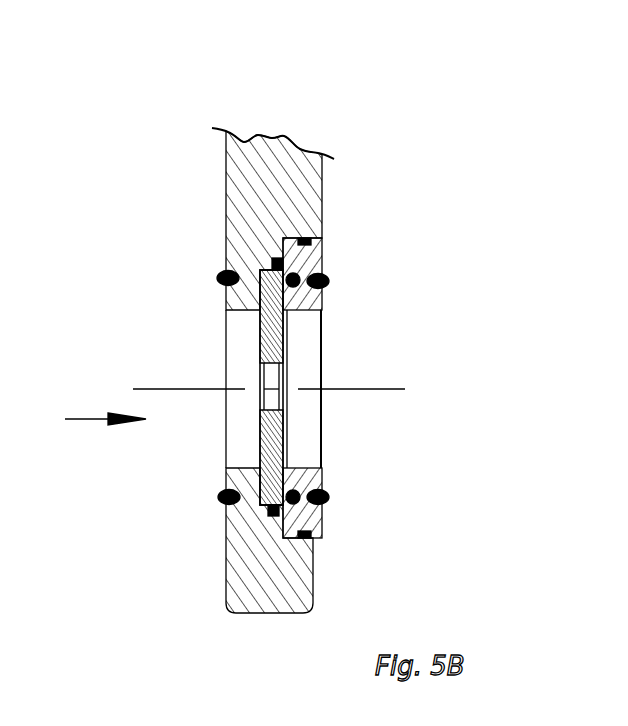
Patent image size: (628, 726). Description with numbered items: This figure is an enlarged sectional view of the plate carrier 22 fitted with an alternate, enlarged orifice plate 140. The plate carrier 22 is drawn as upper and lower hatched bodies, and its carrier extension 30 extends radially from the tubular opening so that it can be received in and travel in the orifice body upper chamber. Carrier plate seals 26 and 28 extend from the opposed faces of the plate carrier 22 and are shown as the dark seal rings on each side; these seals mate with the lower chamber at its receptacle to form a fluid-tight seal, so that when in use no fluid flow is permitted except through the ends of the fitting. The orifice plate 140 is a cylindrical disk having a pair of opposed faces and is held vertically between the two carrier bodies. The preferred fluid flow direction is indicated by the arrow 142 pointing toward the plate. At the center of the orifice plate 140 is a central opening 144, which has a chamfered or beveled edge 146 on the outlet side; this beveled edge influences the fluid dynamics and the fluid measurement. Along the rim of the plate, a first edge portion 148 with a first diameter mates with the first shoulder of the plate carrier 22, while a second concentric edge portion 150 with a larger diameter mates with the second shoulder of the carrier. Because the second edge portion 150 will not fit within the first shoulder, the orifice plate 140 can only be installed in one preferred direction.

The plate carrier 22 is at (248, 613).
The carrier plate seal 26 is at (325, 283).
The carrier plate seal 28 is at (222, 270).
The carrier extension 30 is at (278, 137).
The orifice plate 140 is at (283, 443).
The arrow 142 is at (75, 425).
The central opening 144 is at (259, 366).
The chamfered or beveled edge 146 is at (283, 363).
The first edge portion 148 is at (268, 510).
The second concentric edge portion 150 is at (295, 254).